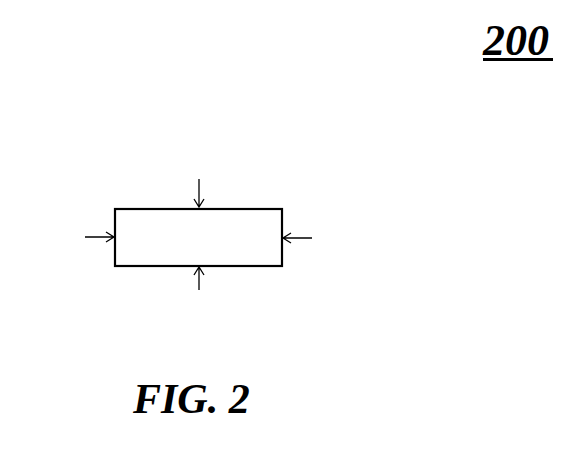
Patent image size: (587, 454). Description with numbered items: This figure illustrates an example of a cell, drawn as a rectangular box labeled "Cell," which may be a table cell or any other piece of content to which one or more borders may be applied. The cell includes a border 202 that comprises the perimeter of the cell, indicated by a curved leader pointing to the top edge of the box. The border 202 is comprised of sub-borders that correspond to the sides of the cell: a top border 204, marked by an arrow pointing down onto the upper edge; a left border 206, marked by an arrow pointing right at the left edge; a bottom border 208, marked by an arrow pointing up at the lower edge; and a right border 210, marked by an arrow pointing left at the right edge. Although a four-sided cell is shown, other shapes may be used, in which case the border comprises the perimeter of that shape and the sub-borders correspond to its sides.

The border 202 is at (243, 209).
The top border 204 is at (199, 179).
The left border 206 is at (78, 235).
The bottom border 208 is at (199, 296).
The right border 210 is at (316, 237).